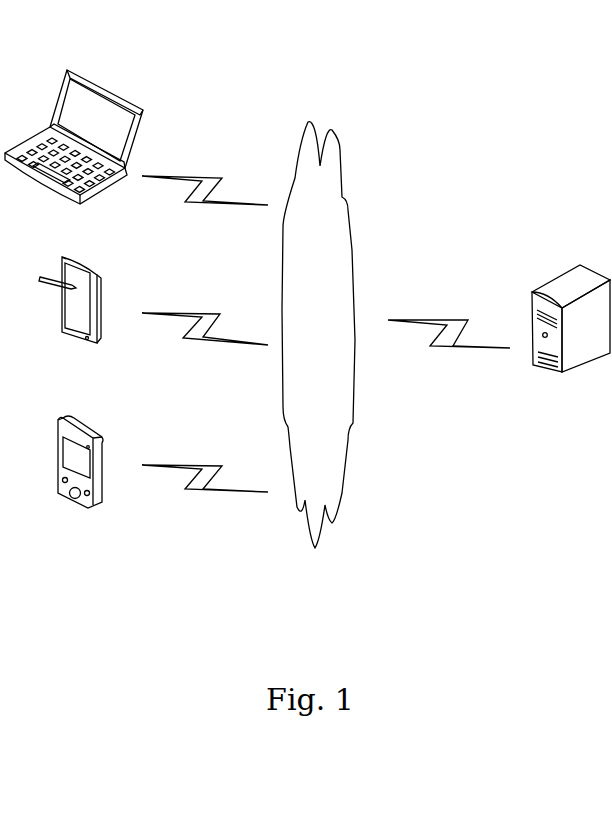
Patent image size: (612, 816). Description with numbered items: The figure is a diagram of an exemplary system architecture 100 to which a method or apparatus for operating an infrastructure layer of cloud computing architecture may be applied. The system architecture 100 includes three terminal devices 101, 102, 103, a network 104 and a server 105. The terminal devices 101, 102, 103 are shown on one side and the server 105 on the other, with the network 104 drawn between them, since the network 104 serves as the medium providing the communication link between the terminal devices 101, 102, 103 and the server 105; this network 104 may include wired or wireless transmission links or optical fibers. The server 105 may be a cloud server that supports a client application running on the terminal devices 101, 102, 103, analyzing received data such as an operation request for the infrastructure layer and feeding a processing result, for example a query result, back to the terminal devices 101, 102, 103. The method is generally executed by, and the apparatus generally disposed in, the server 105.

The system 100 is at (500, 40).
The terminal device 101 is at (80, 477).
The terminal device 102 is at (70, 318).
The terminal device 103 is at (74, 152).
The network 104 is at (318, 335).
The server 105 is at (571, 333).